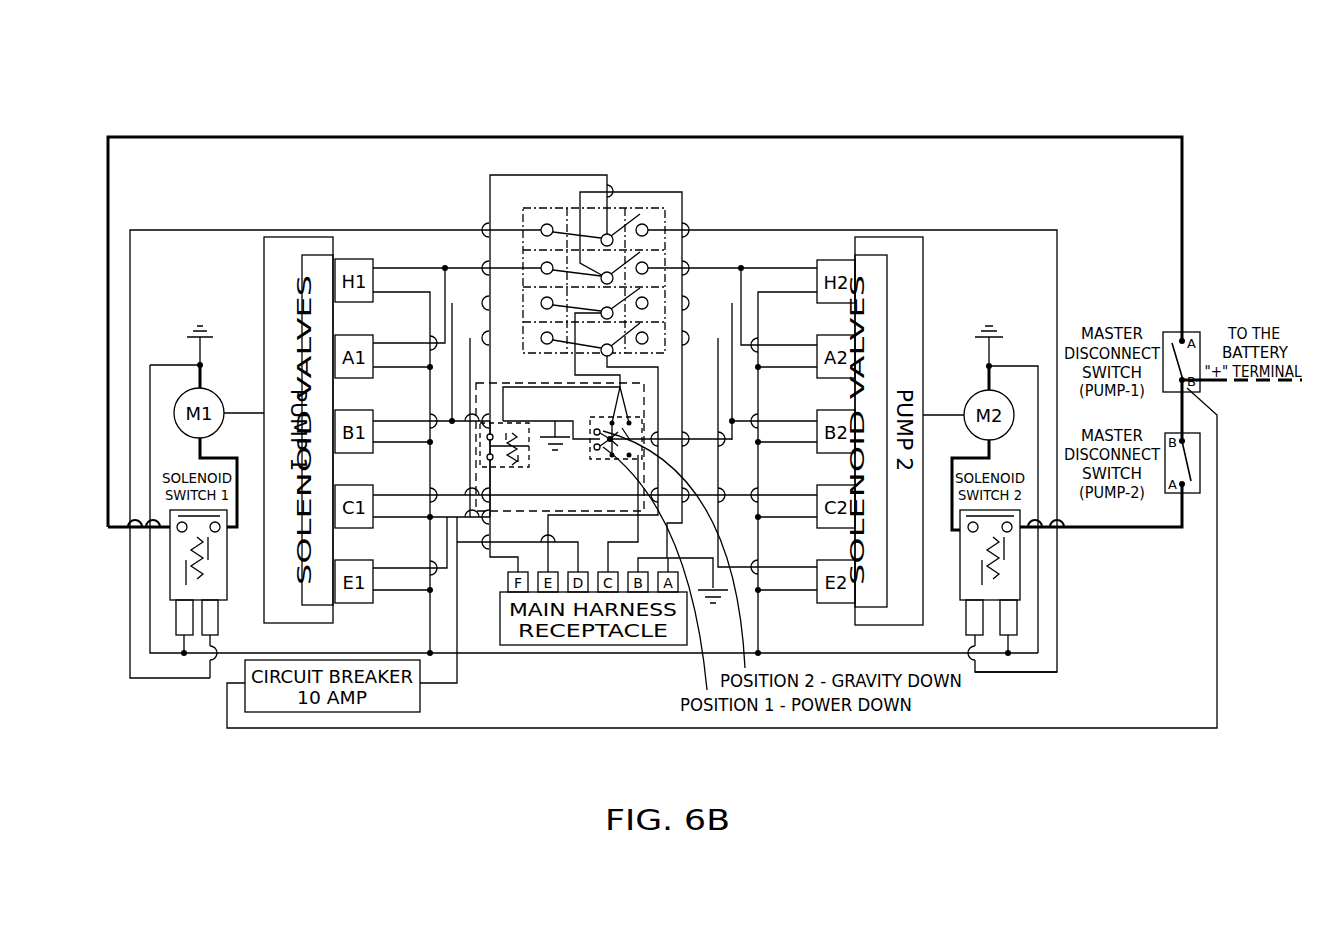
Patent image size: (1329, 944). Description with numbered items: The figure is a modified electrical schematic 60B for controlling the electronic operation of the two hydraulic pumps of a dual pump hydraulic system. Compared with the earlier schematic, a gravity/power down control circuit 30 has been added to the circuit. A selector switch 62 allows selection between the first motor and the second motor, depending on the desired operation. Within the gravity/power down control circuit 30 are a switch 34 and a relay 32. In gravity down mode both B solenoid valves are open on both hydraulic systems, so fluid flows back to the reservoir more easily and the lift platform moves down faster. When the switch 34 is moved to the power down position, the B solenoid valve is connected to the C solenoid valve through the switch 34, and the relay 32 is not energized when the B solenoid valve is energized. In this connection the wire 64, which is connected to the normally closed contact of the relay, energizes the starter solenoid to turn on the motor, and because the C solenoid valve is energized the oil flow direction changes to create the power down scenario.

The modified electrical schematic 60B is at (1040, 127).
The wire 64 is at (398, 228).
The selector switch 62 is at (628, 207).
The gravity/power down control circuit 30 is at (552, 575).
The relay 32 is at (497, 467).
The switch 34 is at (602, 460).